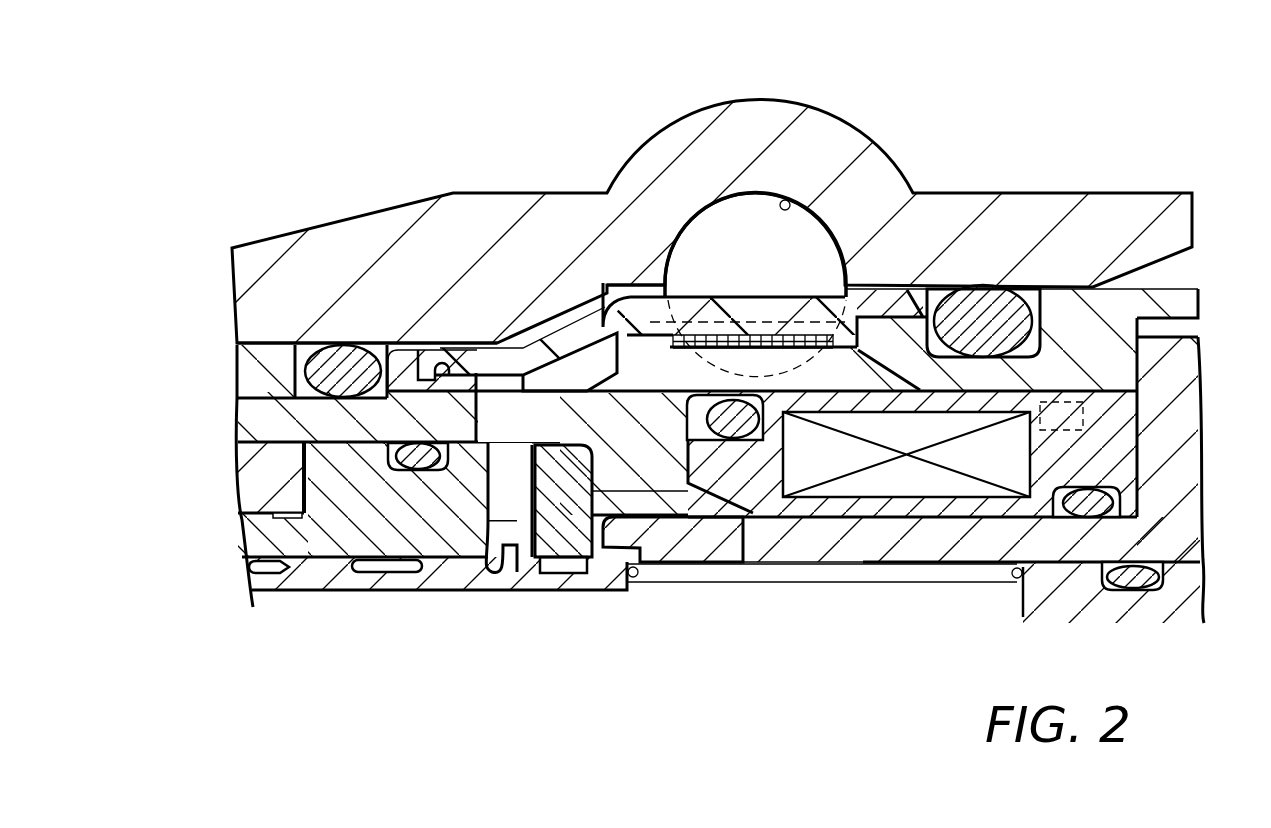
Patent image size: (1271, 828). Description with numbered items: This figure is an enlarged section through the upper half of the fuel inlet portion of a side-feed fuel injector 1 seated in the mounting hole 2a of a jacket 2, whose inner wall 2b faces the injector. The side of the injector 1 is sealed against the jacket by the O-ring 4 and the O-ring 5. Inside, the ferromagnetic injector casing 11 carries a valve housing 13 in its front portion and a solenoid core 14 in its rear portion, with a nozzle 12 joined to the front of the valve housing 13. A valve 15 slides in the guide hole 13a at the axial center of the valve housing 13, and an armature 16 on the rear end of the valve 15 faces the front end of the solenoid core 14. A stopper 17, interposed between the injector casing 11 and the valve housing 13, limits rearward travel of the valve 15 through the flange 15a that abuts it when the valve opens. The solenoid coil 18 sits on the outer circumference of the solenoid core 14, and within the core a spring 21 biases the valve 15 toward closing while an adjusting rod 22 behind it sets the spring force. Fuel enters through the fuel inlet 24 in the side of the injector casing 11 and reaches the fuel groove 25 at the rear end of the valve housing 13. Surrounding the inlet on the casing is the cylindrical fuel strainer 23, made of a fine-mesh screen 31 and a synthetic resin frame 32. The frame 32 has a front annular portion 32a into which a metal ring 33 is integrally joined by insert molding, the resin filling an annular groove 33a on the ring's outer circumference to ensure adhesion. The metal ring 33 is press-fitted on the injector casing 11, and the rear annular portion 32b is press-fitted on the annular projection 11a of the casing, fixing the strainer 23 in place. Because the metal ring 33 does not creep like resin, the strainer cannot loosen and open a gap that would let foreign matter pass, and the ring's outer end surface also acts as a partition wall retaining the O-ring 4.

The fuel injector 1 is at (222, 484).
The jacket 2 is at (265, 255).
The mounting hole 2a is at (240, 352).
The spherical recess 2b is at (790, 200).
The O-ring 4 is at (335, 355).
The O-ring 5 is at (985, 290).
The injector casing 11 is at (255, 418).
The annular projection 11a is at (935, 290).
The nozzle 12 is at (250, 493).
The valve housing 13 is at (343, 548).
The guide hole 13a is at (387, 572).
The solenoid core 14 is at (1060, 553).
The valve 15 is at (432, 575).
The flange 15a is at (514, 548).
The armature 16 is at (693, 547).
The stopper 17 is at (541, 575).
The solenoid coil 18 is at (903, 483).
The spring 21 is at (933, 580).
The adjusting rod 22 is at (1143, 600).
The fuel strainer 23 is at (690, 275).
The fuel inlet 24 is at (482, 403).
The fuel groove 25 is at (511, 460).
The fine-mesh screen 31 is at (740, 318).
The synthetic resin frame 32 is at (570, 330).
The front annular portion 32a is at (432, 362).
The rear annular portion 32b is at (885, 295).
The metal ring 33 is at (400, 345).
The annular groove 33a is at (464, 445).